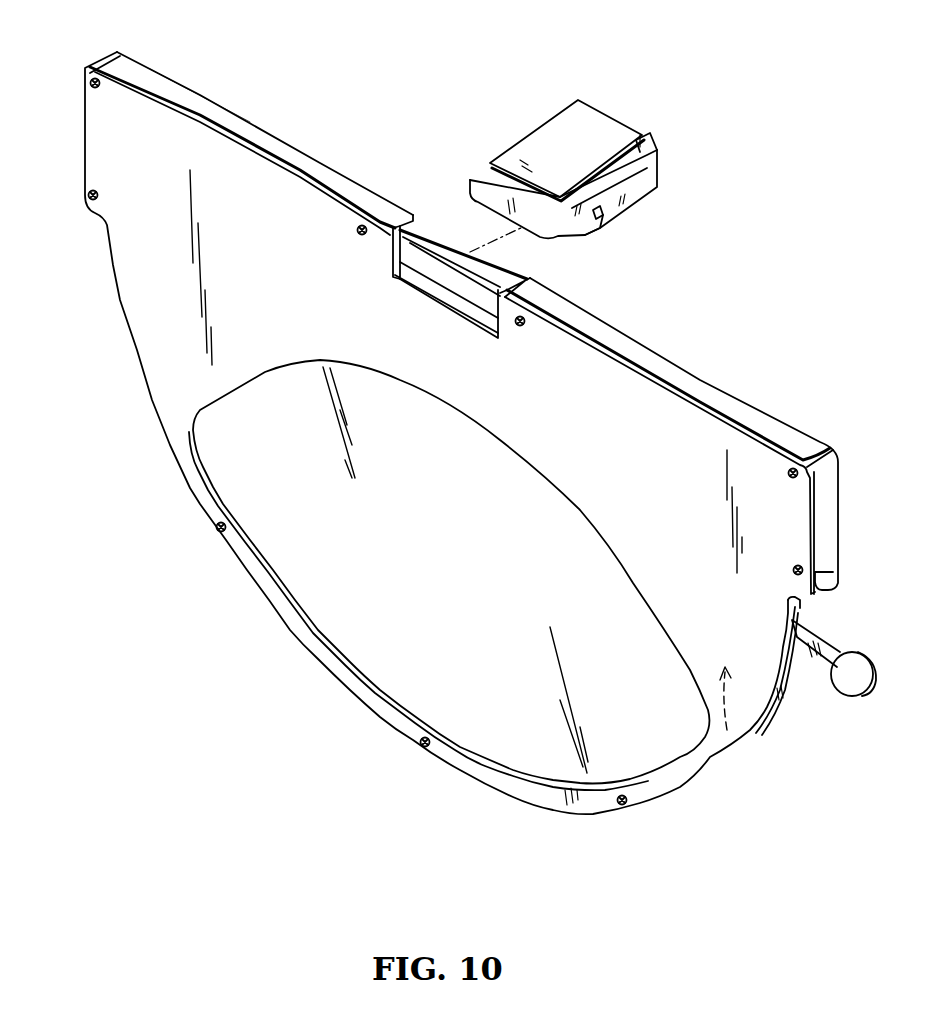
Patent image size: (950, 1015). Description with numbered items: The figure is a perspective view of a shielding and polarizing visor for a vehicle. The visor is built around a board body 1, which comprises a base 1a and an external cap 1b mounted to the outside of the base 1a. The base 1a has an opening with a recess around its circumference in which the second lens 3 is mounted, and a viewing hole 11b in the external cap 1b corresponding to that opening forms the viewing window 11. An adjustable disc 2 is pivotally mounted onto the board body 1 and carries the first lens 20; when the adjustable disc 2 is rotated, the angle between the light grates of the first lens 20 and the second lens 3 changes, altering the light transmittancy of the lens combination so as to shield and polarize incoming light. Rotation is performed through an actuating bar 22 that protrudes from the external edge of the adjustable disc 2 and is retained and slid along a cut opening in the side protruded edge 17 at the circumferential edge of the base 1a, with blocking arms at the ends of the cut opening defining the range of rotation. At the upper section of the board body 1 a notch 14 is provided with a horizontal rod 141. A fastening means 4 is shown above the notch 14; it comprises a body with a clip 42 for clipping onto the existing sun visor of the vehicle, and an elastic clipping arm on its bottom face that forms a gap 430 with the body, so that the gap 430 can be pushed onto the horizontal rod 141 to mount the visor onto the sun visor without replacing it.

The board body 1 is at (333, 68).
The base 1a is at (263, 128).
The external cap 1b is at (263, 180).
The adjustable disc 2 is at (730, 757).
The second lens 3 is at (733, 384).
The fastening means 4 is at (619, 116).
The viewing window 11 is at (83, 98).
The viewing hole 11b is at (457, 747).
The notch 14 is at (520, 278).
The side protruded edge 17 is at (178, 97).
The first lens 20 is at (547, 733).
The actuating bar 22 is at (838, 677).
The clip 42 is at (645, 178).
The horizontal rod 141 is at (433, 237).
The gap 430 is at (597, 203).